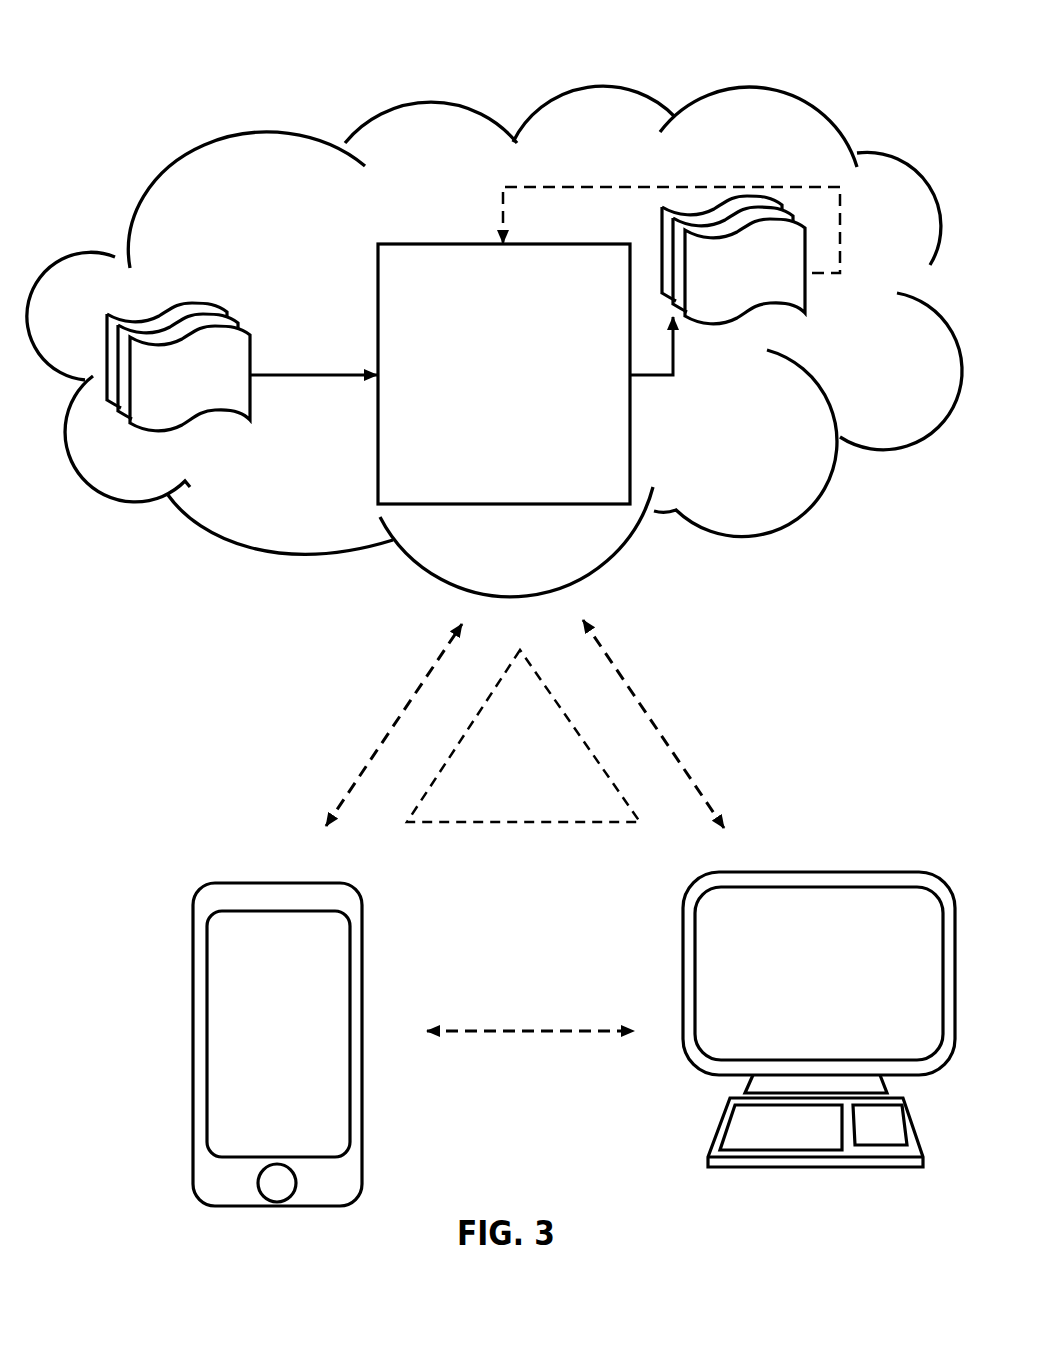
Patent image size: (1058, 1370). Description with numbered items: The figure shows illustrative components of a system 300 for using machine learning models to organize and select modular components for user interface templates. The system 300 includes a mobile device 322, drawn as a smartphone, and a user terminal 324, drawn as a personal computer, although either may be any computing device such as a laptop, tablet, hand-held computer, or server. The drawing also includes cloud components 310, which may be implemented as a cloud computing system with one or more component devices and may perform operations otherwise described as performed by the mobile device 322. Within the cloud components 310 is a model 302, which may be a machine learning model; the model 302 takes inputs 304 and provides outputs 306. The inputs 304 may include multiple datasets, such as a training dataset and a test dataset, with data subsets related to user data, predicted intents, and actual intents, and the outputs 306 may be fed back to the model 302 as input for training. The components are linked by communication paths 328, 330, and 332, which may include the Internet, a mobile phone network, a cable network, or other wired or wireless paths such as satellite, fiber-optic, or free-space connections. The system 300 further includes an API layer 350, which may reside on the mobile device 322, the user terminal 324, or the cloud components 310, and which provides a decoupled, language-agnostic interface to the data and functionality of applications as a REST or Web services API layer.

The system 300 is at (480, 82).
The model 302 is at (485, 391).
The inputs 304 is at (197, 306).
The outputs 306 is at (784, 304).
The cloud components 310 is at (803, 150).
The mobile device 322 is at (268, 859).
The user terminal 324 is at (813, 863).
The communication path 328 is at (349, 710).
The communication path 330 is at (733, 678).
The communication path 332 is at (521, 997).
The API layer 350 is at (505, 761).